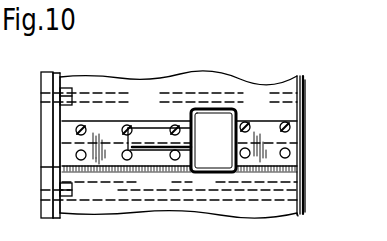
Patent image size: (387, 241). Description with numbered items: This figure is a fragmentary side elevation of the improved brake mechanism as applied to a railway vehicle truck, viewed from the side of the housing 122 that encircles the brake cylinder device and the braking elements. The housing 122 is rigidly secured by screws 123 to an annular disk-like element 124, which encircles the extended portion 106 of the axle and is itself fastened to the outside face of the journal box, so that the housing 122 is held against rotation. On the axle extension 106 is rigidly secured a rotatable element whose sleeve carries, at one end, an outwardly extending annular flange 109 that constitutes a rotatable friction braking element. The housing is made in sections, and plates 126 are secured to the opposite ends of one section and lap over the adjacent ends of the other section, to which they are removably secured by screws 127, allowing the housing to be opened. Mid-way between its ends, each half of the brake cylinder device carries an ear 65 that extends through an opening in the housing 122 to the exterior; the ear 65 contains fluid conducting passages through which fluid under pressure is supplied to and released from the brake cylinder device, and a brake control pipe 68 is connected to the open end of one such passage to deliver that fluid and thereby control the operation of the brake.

The ear 65 is at (210, 154).
The brake control pipe 68 is at (160, 144).
The extended portion of the axle 106 is at (303, 152).
The annular flange 109 is at (296, 174).
The housing 122 is at (301, 98).
The screw 123 is at (62, 102).
The annular disk-like element 124 is at (47, 160).
The plate 126 is at (97, 124).
The screw 127 is at (85, 127).